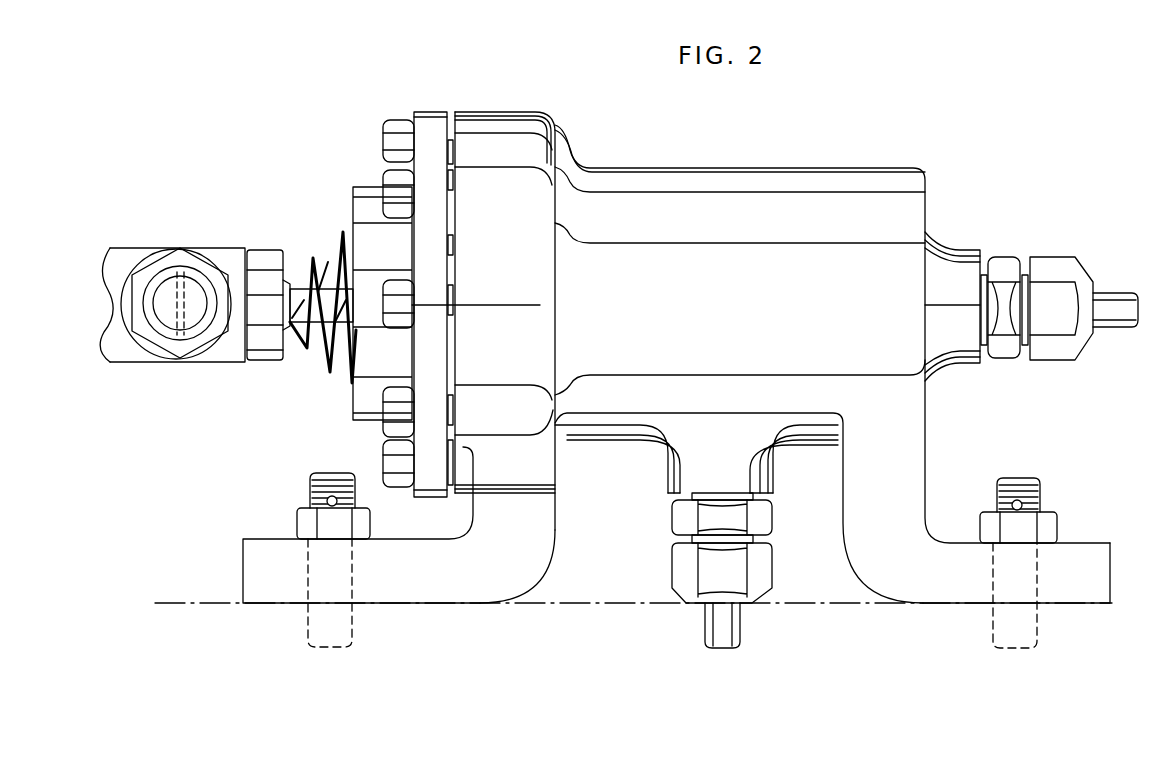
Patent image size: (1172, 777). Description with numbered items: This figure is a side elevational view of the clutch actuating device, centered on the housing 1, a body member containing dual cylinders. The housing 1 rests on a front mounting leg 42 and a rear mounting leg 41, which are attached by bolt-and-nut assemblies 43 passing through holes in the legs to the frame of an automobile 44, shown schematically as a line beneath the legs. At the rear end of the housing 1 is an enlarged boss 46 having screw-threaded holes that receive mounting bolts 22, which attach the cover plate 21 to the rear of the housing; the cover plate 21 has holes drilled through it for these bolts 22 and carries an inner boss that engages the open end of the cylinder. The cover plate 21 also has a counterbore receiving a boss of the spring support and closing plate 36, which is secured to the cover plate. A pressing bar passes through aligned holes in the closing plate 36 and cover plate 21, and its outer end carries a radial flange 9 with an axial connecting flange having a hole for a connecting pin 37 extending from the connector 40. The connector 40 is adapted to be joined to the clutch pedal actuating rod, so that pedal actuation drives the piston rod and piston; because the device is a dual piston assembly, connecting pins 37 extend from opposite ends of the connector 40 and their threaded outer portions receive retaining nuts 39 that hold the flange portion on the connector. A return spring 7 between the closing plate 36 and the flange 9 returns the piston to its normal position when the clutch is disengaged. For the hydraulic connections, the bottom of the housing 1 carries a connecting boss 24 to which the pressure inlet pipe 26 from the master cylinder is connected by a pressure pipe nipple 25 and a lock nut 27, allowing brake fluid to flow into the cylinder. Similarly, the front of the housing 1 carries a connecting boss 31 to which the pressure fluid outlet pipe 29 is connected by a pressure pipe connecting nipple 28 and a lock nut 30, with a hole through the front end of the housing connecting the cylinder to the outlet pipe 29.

The housing 1 is at (519, 123).
The return spring 7 is at (308, 262).
The radial flange 9 is at (270, 250).
The cover plate 21 is at (430, 112).
The mounting bolts 22 is at (393, 118).
The connecting boss 24 is at (676, 466).
The pressure pipe nipple 25 is at (680, 520).
The pressure inlet pipe 26 is at (710, 613).
The lock nut 27 is at (683, 562).
The pressure pipe connecting nipple 28 is at (1008, 265).
The pressure fluid outlet pipe 29 is at (1115, 325).
The lock nut 30 is at (1060, 270).
The connecting boss 31 is at (960, 258).
The spring support and closing plate 36 is at (355, 190).
The connecting pin 37 is at (195, 292).
The retaining nuts 39 is at (166, 262).
The connector 40 is at (130, 248).
The rear mounting leg 41 is at (468, 597).
The front mounting leg 42 is at (955, 598).
The bolt-and-nut assemblies 43 is at (300, 522).
The frame of an automobile 44 is at (192, 600).
The enlarged boss 46 is at (537, 115).